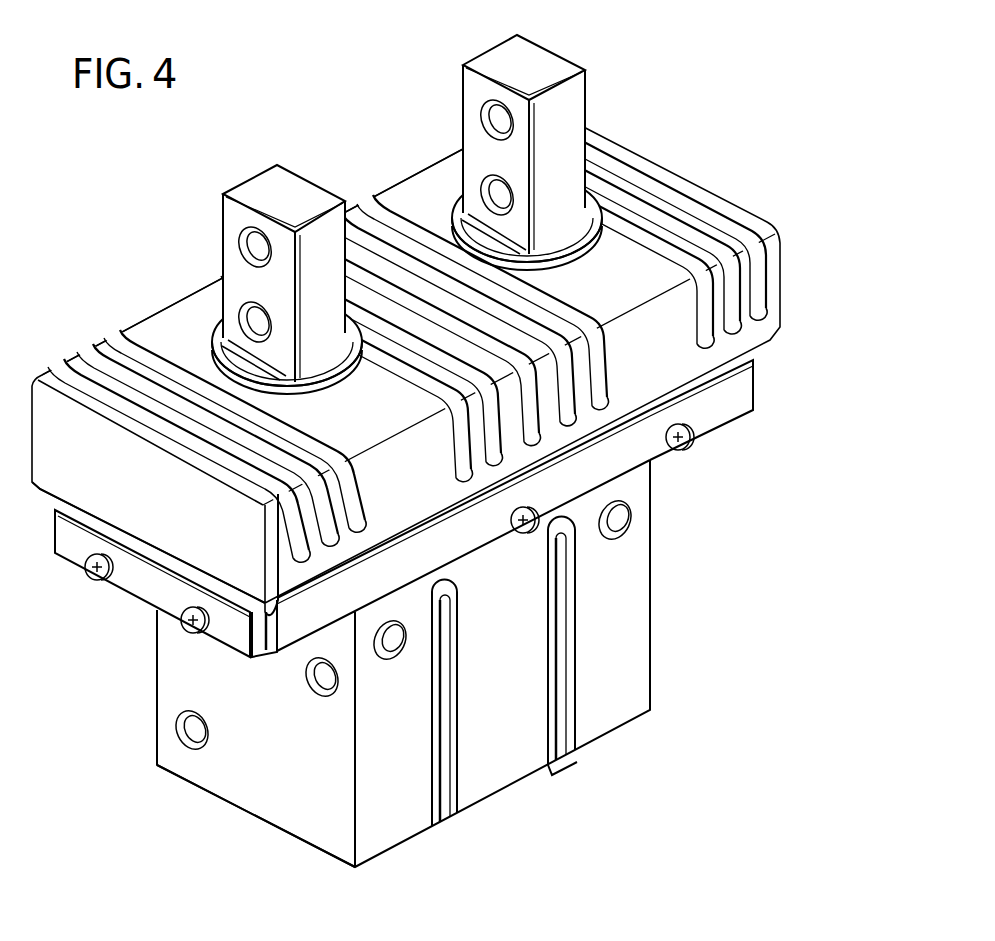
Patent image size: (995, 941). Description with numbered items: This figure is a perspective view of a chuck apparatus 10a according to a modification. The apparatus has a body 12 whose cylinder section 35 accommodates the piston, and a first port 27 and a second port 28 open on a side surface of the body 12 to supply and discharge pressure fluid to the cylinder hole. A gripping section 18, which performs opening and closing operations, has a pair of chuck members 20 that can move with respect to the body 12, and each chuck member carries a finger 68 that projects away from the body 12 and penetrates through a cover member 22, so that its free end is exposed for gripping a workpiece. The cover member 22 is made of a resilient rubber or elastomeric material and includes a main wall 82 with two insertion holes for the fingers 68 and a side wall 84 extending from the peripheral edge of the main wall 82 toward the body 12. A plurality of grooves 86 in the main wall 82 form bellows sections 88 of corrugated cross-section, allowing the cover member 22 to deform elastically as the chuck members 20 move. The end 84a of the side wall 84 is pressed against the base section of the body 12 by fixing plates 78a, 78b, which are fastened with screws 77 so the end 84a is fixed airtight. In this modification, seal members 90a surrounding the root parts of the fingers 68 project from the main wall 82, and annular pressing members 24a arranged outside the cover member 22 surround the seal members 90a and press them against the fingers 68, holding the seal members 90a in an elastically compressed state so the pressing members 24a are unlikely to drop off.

The chuck apparatus 10a is at (119, 156).
The body 12 is at (443, 663).
The gripping section 18 is at (550, 70).
The chuck members 20 is at (403, 208).
The cover member 22 is at (406, 359).
The pressing members 24a is at (407, 280).
The first port 27 is at (323, 692).
The second port 28 is at (195, 740).
The cylinder section 35 is at (263, 807).
The finger 68 is at (472, 130).
The screws 77 is at (678, 453).
The fixing plate 78a is at (67, 558).
The fixing plate 78b is at (728, 410).
The main wall 82 is at (387, 200).
The side wall 84 is at (152, 520).
The end of the side wall 84a is at (470, 503).
The grooves 86 is at (723, 213).
The bellows sections 88 is at (748, 220).
The seal members 90a is at (483, 232).